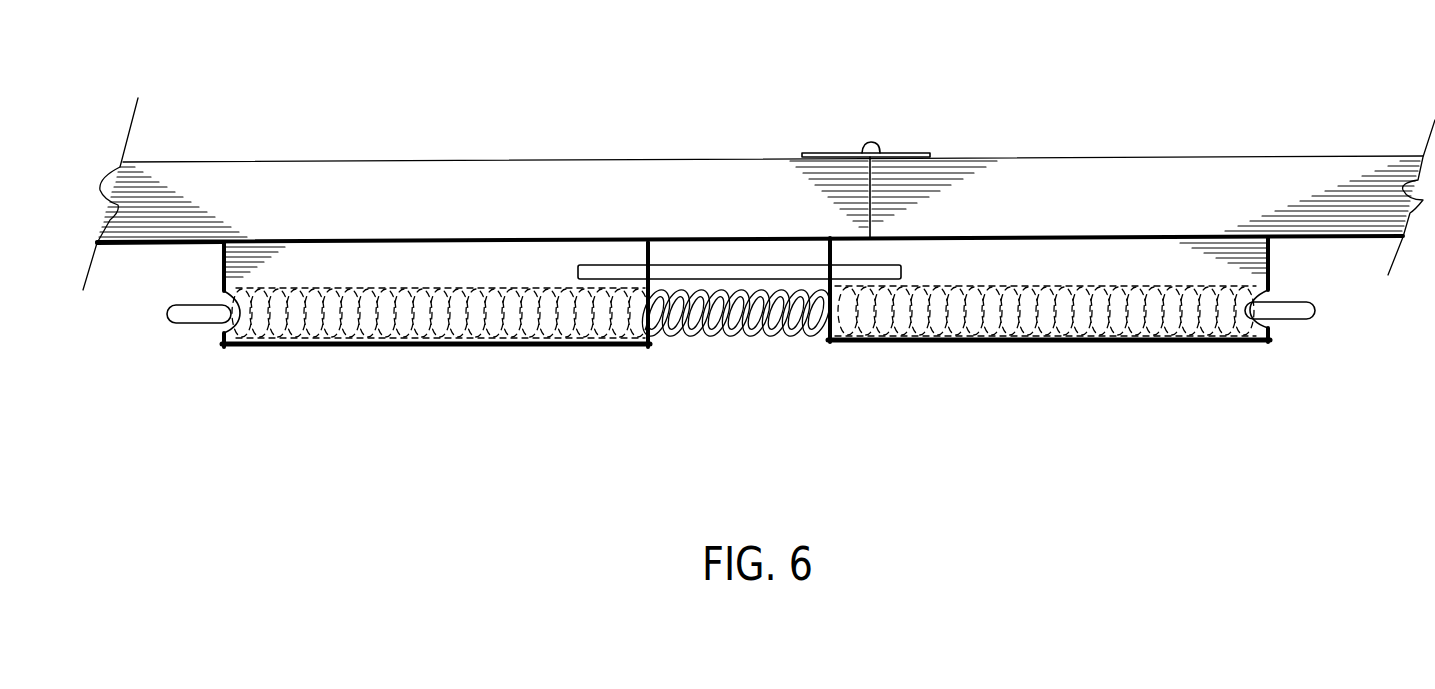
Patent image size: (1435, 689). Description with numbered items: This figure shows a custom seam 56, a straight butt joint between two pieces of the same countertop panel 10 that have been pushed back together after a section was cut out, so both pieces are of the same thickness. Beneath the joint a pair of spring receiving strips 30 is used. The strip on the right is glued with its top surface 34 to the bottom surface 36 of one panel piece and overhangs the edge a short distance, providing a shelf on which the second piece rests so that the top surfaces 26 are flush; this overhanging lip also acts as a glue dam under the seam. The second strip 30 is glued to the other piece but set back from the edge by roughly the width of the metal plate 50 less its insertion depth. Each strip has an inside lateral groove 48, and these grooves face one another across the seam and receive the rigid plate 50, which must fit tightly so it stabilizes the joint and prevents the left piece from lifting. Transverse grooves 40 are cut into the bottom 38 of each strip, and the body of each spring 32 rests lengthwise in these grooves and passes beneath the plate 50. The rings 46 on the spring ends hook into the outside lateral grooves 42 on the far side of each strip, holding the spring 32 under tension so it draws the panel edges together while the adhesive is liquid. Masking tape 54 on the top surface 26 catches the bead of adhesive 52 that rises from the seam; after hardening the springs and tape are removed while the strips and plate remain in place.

The panel 10 is at (258, 162).
The top surface 26 is at (425, 162).
The top surface of strip 34 is at (533, 242).
The bottom surface 36 is at (145, 247).
The bottom of strip 38 is at (529, 347).
The transverse grooves 40 is at (460, 347).
The spring receiving strip 30 is at (362, 347).
The outside lateral groove 42 is at (222, 334).
The rings 46 is at (168, 330).
The inside lateral groove 48 is at (593, 282).
The plate 50 is at (690, 266).
The spring 32 is at (748, 338).
The adhesive 52 is at (873, 143).
The masking tape 54 is at (832, 153).
The custom seam 56 is at (872, 222).